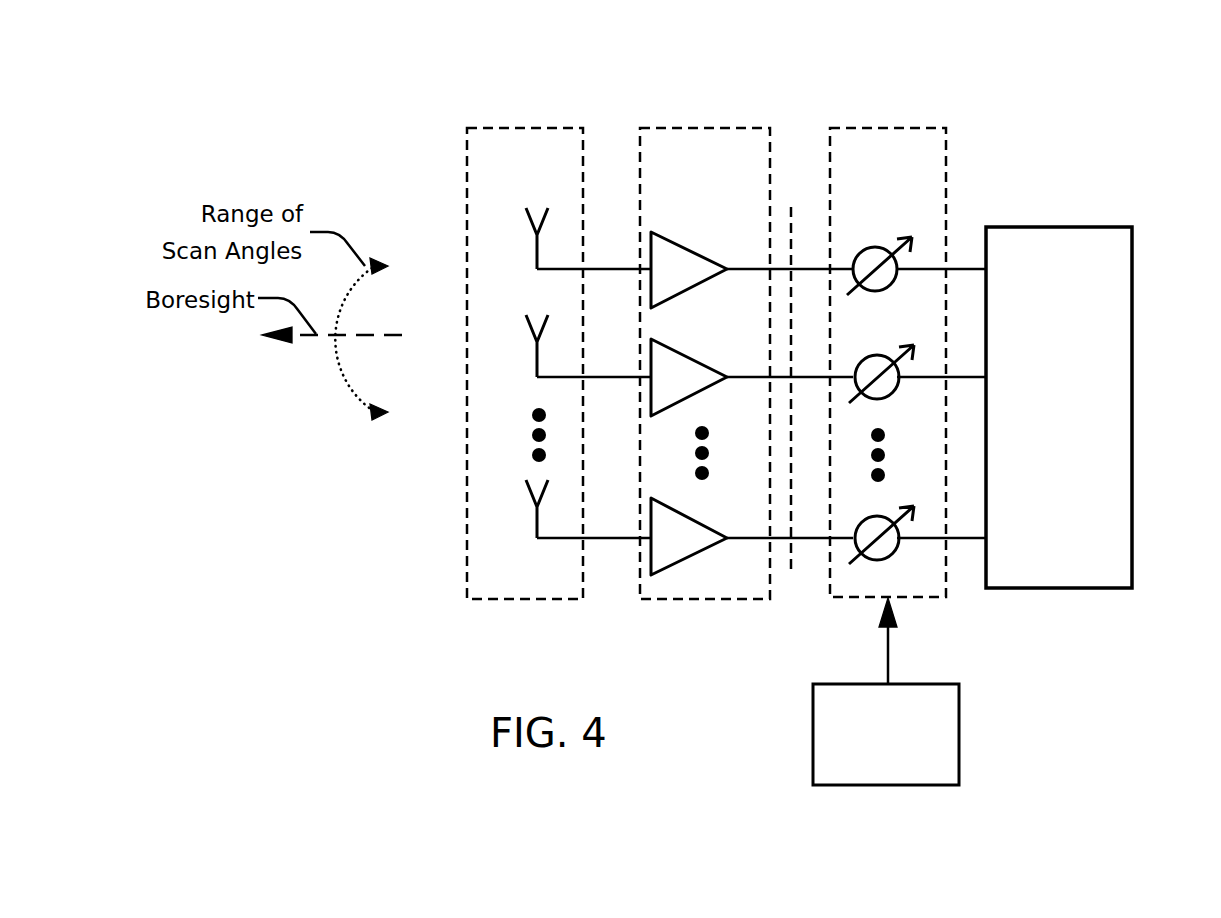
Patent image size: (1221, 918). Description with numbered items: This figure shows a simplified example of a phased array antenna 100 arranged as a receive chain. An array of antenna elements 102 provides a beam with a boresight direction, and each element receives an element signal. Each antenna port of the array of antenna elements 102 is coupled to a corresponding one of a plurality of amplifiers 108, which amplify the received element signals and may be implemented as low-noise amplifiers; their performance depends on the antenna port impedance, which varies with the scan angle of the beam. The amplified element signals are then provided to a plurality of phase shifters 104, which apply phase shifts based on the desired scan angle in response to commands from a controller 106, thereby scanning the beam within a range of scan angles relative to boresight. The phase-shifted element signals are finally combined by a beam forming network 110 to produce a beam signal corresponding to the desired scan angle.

The phased array antenna 100 is at (1033, 72).
The array of antenna elements 102 is at (528, 128).
The phase shifters 104 is at (889, 128).
The controller 106 is at (960, 737).
The amplifiers 108 is at (706, 128).
The beam forming network 110 is at (1024, 227).